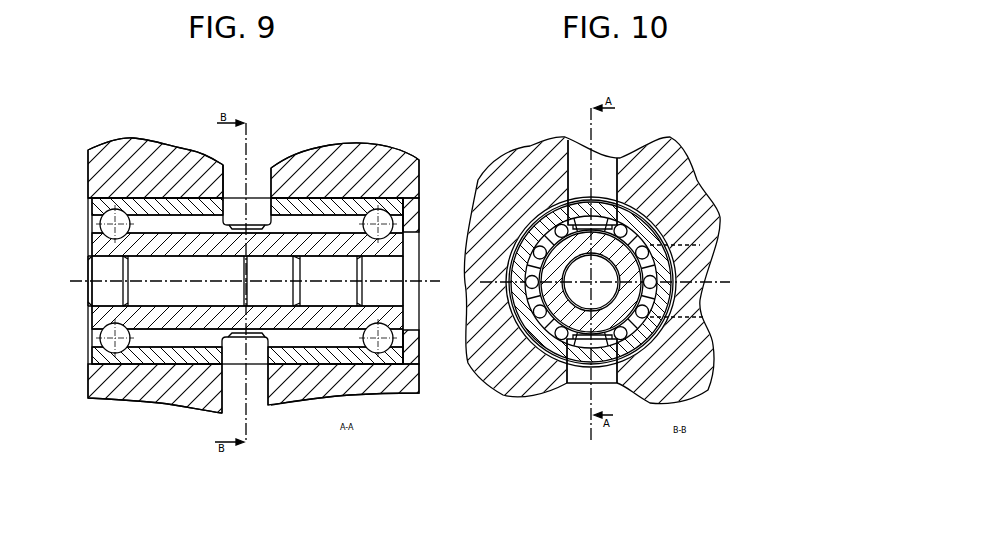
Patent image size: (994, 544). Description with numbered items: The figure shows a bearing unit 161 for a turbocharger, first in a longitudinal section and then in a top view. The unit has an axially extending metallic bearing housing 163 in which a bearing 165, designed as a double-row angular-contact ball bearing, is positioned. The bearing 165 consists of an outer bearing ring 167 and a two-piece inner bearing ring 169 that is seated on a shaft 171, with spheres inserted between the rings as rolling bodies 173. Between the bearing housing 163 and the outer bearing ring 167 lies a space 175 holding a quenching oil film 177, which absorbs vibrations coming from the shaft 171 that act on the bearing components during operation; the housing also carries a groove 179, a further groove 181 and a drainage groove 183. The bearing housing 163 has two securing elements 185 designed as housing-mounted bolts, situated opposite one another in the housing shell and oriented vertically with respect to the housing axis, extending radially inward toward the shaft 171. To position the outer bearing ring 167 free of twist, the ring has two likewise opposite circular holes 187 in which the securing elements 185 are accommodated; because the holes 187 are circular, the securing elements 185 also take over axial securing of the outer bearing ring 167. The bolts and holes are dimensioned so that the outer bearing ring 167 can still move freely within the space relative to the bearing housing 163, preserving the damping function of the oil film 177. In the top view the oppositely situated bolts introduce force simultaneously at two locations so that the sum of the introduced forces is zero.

In FIG. 9, the bearing unit 161 is at (496, 61).
In FIG. 10, the bearing unit 161 is at (746, 61).
In FIG. 9, the bearing housing 163 is at (100, 165).
In FIG. 10, the bearing housing 163 is at (685, 182).
In FIG. 9, the bearing 165 is at (409, 213).
In FIG. 9, the outer bearing ring 167 is at (408, 190).
In FIG. 10, the outer bearing ring 167 is at (670, 240).
In FIG. 9, the inner bearing ring 169 is at (102, 245).
In FIG. 10, the inner bearing ring 169 is at (655, 226).
In FIG. 9, the shaft 171 is at (100, 281).
In FIG. 10, the shaft 171 is at (600, 290).
In FIG. 9, the rolling body 173 is at (100, 224).
In FIG. 10, the rolling body 173 is at (650, 273).
In FIG. 9, the space 175 is at (298, 198).
In FIG. 9, the oil film 177 is at (367, 285).
In FIG. 9, the groove 179 is at (178, 199).
In FIG. 9, the groove 181 is at (348, 190).
In FIG. 9, the drainage groove 183 is at (215, 198).
In FIG. 9, the securing element 185 is at (260, 185).
In FIG. 10, the securing element 185 is at (580, 167).
In FIG. 9, the hole 187 is at (221, 185).
In FIG. 10, the hole 187 is at (560, 180).